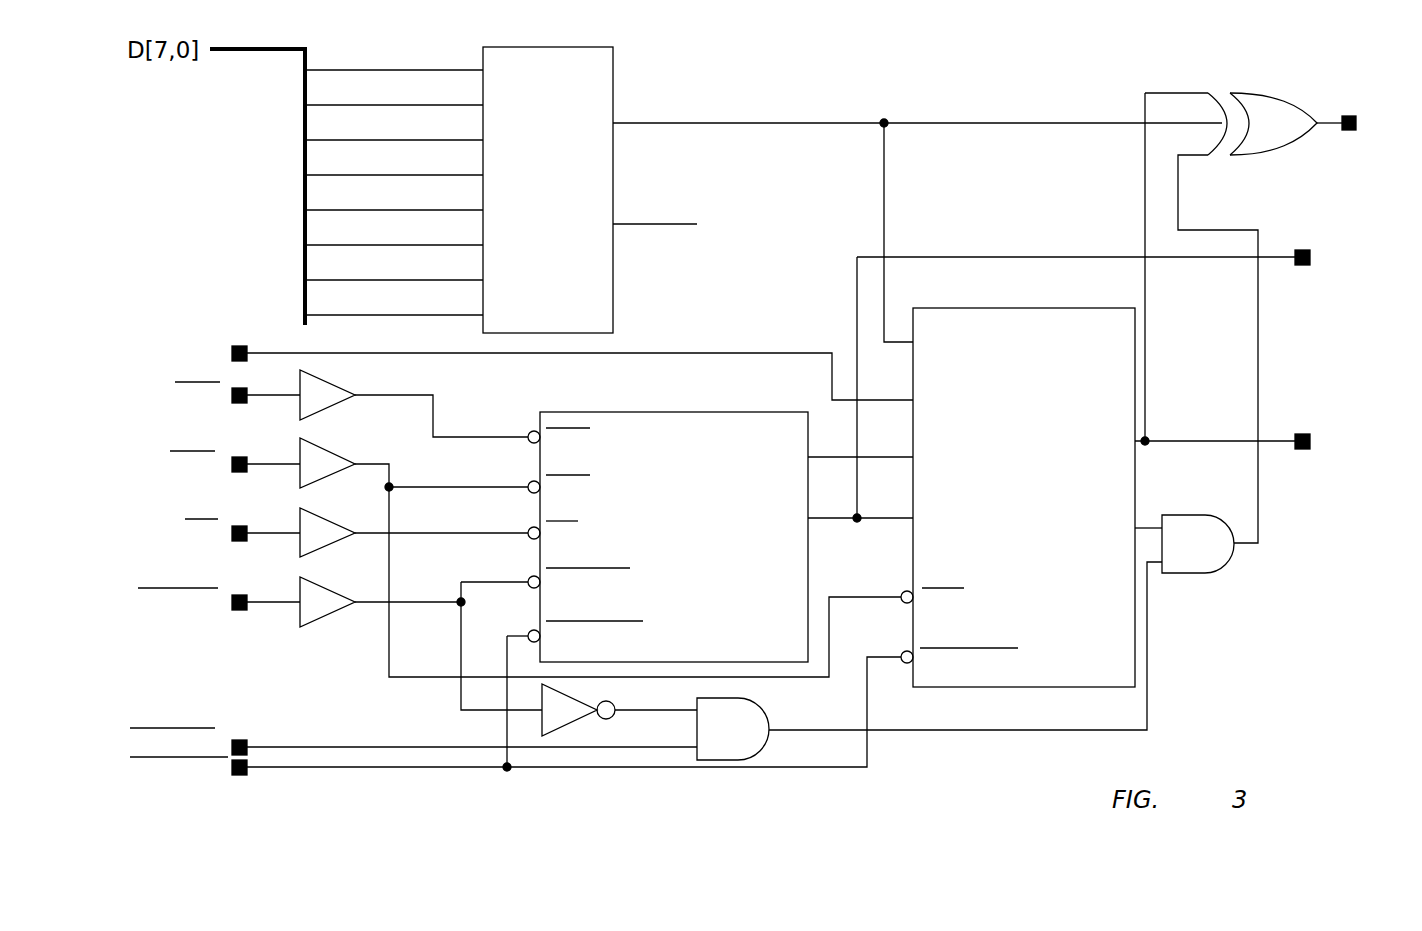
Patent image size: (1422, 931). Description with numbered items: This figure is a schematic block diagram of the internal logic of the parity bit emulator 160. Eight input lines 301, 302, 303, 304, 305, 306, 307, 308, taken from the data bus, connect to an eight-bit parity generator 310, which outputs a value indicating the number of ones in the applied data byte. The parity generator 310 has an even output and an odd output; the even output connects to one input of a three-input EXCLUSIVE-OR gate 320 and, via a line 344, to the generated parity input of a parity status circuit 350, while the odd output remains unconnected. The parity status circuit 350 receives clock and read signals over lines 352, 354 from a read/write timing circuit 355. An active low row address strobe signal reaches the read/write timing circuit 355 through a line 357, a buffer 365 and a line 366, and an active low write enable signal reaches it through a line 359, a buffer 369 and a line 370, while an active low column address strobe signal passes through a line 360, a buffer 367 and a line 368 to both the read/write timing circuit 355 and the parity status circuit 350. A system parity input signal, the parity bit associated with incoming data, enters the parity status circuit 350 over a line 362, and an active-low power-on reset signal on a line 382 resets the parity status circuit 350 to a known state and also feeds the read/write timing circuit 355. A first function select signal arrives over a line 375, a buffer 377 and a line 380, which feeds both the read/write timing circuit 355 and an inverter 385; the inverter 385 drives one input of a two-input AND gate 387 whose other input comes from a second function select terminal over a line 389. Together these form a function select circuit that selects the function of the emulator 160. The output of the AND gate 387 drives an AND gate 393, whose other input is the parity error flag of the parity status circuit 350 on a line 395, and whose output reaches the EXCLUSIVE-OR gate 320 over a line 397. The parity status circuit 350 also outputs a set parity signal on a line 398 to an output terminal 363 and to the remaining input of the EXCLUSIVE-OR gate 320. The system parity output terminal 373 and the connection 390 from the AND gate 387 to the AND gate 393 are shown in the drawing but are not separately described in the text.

The parity bit emulator 160 is at (890, 36).
The input line 301 is at (335, 72).
The input line 302 is at (335, 107).
The input line 303 is at (335, 142).
The input line 304 is at (335, 177).
The input line 305 is at (335, 212).
The input line 306 is at (335, 247).
The input line 307 is at (335, 282).
The input line 308 is at (335, 317).
The eight-bit parity generator 310 is at (530, 47).
The three-input EXCLUSIVE-OR gate 320 is at (1265, 93).
The line 344 is at (930, 122).
The parity status circuit 350 is at (945, 308).
The line 352 is at (830, 458).
The line 354 is at (843, 520).
The read/write timing circuit 355 is at (675, 412).
The line 357 is at (273, 397).
The line 359 is at (280, 535).
The line 360 is at (278, 466).
The line 362 is at (700, 352).
The output terminal 363 is at (1303, 432).
The buffer 365 is at (330, 376).
The line 366 is at (445, 432).
The buffer 367 is at (330, 445).
The line 368 is at (433, 487).
The buffer 369 is at (315, 550).
The line 370 is at (433, 535).
The SYSPOE output terminal 373 is at (1277, 255).
The line 375 is at (275, 605).
The buffer 377 is at (305, 627).
The line 380 is at (460, 686).
The line 382 is at (322, 768).
The inverter 385 is at (560, 725).
The two-input AND gate 387 is at (748, 698).
The line 389 is at (310, 747).
The AND gate output line 390 is at (1147, 712).
The AND gate 393 is at (1185, 575).
The line 395 is at (1147, 527).
The line 397 is at (1240, 537).
The line 398 is at (1147, 278).